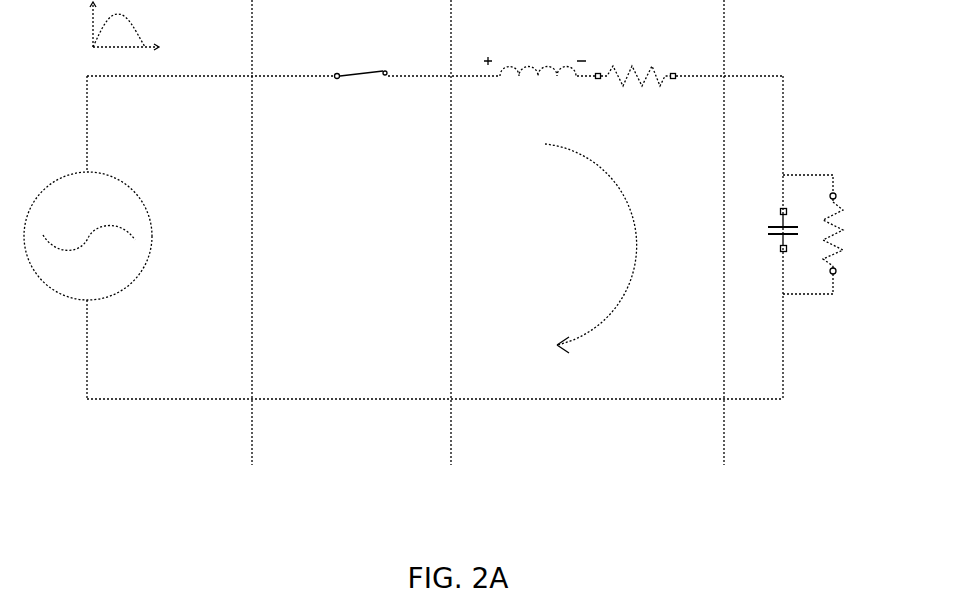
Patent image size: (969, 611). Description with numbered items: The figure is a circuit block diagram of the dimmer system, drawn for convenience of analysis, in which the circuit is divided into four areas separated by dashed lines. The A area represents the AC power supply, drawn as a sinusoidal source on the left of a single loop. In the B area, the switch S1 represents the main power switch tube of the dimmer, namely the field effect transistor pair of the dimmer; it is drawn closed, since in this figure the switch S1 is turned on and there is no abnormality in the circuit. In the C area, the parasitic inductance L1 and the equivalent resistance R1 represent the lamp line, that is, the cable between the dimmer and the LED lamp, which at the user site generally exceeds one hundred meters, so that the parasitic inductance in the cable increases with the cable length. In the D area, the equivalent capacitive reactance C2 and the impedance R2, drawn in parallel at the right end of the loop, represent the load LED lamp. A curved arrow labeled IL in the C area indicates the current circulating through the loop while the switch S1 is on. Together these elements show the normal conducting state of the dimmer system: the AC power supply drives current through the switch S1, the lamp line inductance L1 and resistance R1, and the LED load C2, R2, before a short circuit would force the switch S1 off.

The main power switch tube S1 is at (361, 57).
The parasitic inductance L1 is at (535, 54).
The equivalent resistance R1 is at (636, 60).
The equivalent capacitive reactance C2 is at (773, 229).
The equivalent impedance R2 is at (832, 234).
The inductor current IL is at (597, 248).
The A area A is at (193, 232).
The B area B is at (401, 232).
The C area C is at (649, 232).
The D area D is at (441, 259).